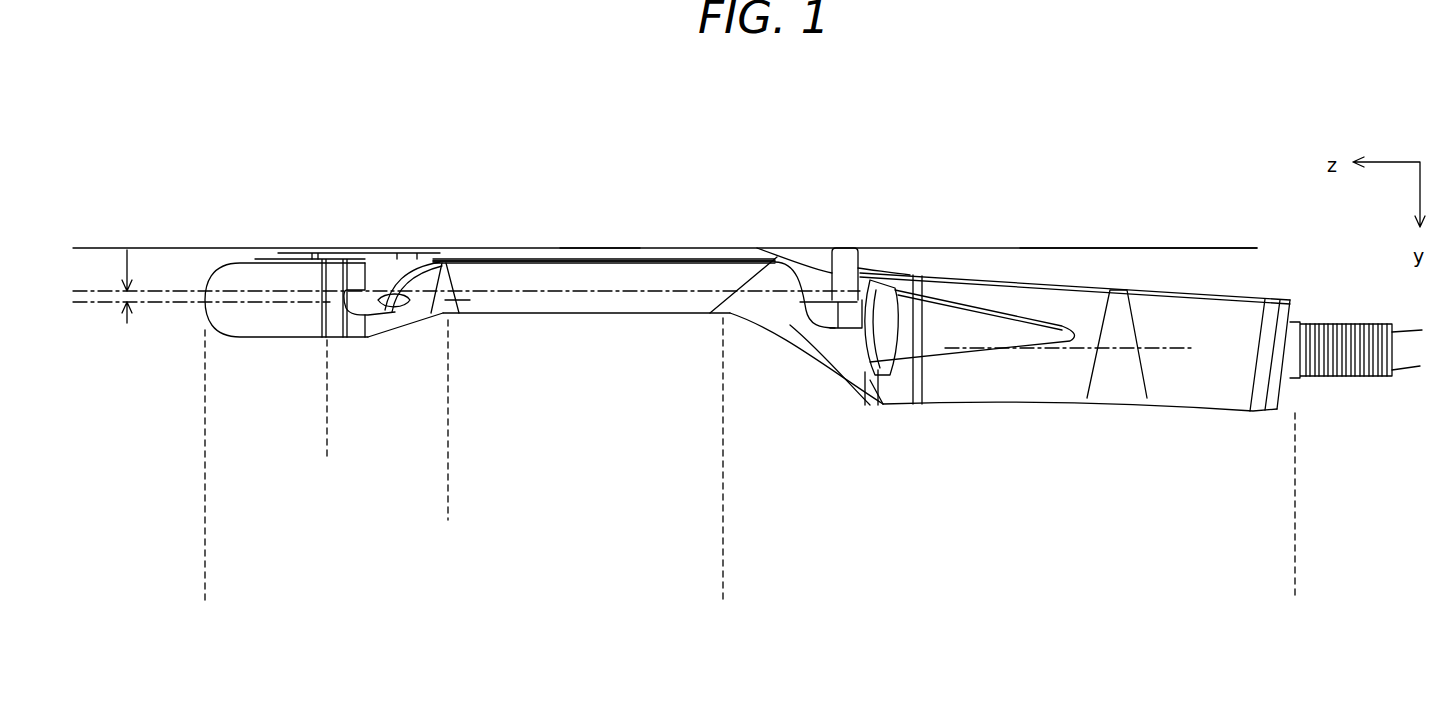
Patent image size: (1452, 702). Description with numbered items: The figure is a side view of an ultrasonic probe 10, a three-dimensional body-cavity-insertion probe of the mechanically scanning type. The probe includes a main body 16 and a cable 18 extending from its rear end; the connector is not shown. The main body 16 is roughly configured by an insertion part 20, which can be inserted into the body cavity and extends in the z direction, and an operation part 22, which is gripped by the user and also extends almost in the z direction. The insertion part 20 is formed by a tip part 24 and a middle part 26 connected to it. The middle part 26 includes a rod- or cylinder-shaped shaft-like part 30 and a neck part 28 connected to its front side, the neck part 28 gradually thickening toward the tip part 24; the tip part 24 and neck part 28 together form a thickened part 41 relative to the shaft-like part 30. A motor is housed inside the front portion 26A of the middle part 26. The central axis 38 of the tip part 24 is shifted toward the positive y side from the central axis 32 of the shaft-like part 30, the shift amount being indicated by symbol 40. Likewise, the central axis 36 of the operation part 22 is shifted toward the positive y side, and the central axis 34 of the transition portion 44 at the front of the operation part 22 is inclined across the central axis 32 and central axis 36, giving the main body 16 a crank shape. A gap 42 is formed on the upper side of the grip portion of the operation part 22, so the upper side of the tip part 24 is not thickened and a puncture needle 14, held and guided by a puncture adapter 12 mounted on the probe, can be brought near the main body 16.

The ultrasonic probe 10 is at (942, 252).
The puncture adapter 12 is at (599, 240).
The puncture needle 14 is at (1063, 248).
The main body 16 is at (670, 262).
The cable 18 is at (1410, 333).
The insertion part 20 is at (712, 595).
The operation part 22 is at (1284, 595).
The tip part 24 is at (205, 383).
The middle part 26 is at (712, 388).
The front portion of the middle part 26A is at (460, 298).
The neck part 28 is at (437, 450).
The shaft-like part 30 is at (712, 450).
The central axis of the shaft-like part 32 is at (170, 248).
The central axis of the transition portion 34 is at (832, 305).
The central axis of the operation part 36 is at (1012, 350).
The central axis of the tip part 38 is at (168, 265).
The shift amount 40 is at (129, 304).
The thickened part 41 is at (437, 508).
The gap 42 is at (897, 263).
The transition portion 44 is at (823, 357).